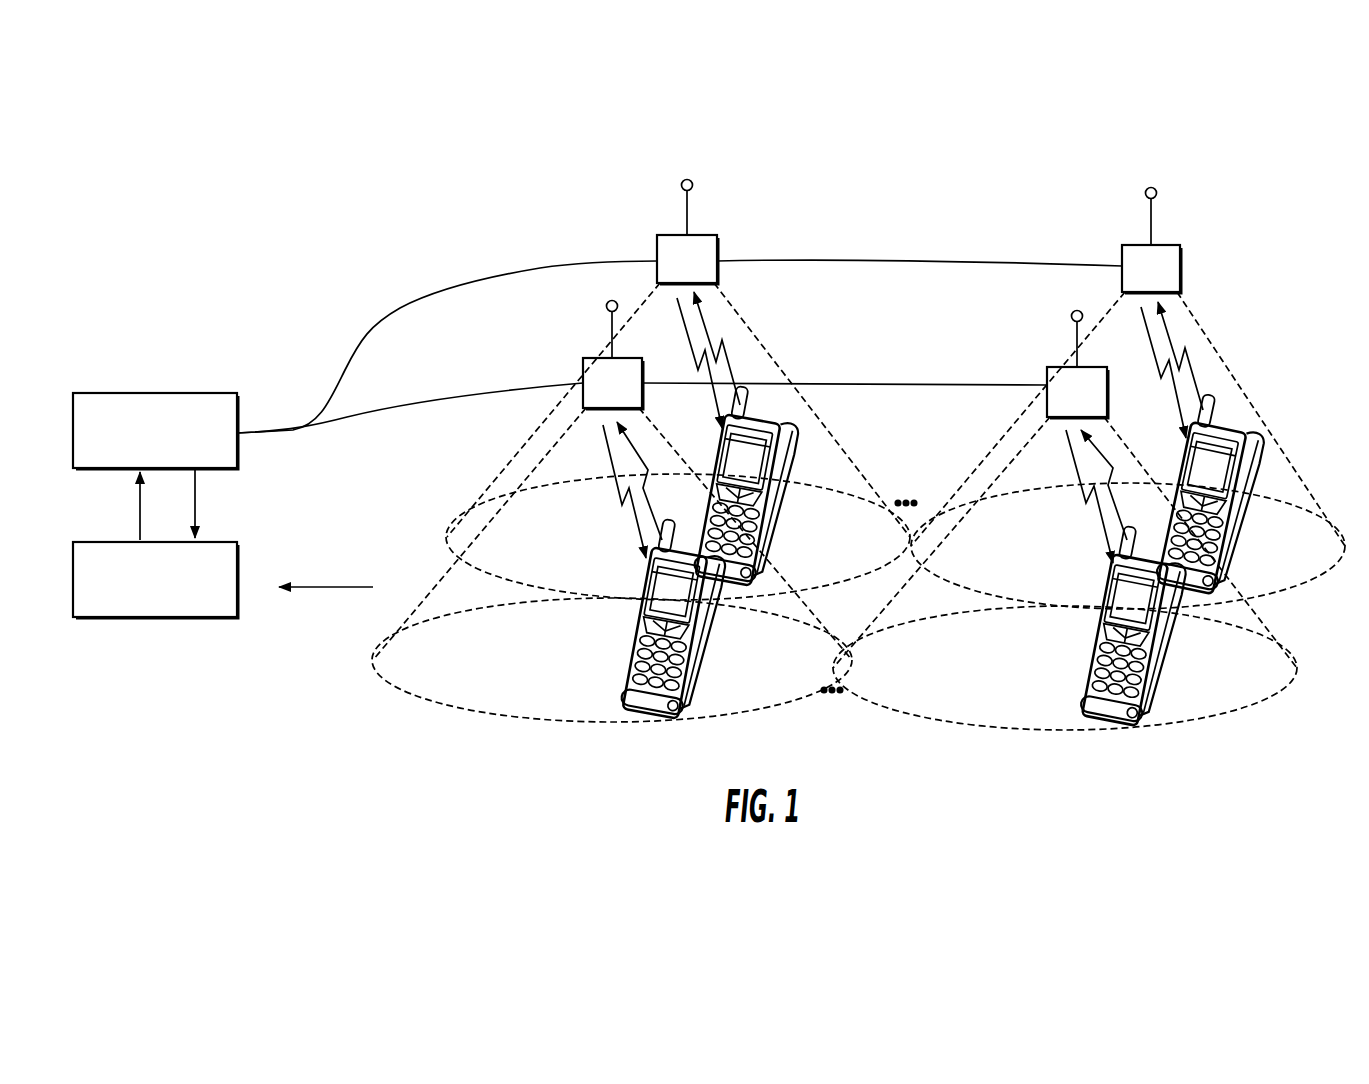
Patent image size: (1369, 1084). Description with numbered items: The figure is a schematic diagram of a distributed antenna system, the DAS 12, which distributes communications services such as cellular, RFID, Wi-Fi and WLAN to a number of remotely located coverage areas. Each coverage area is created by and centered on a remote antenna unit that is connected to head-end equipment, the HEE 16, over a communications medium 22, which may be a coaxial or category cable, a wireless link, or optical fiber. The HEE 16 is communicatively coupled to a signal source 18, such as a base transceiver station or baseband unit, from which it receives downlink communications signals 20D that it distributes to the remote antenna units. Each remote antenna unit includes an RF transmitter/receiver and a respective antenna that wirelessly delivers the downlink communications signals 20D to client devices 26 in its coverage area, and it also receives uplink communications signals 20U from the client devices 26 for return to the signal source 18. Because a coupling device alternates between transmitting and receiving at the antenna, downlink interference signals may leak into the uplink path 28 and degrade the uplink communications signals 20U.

The distributed antenna system (DAS) 12 is at (882, 214).
The head-end equipment (HEE) 16 is at (167, 446).
The signal source 18 is at (167, 594).
The downlink communications signals 20D is at (139, 506).
The uplink communications signals 20U is at (198, 516).
The communications medium 22 is at (472, 282).
The client devices 26 is at (793, 487).
The uplink path 28 is at (350, 588).